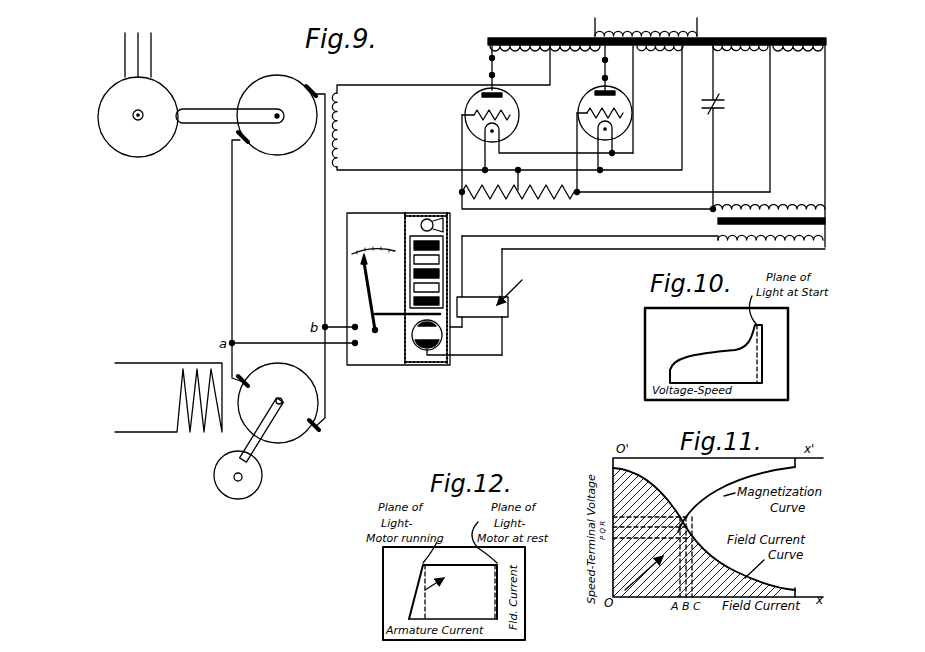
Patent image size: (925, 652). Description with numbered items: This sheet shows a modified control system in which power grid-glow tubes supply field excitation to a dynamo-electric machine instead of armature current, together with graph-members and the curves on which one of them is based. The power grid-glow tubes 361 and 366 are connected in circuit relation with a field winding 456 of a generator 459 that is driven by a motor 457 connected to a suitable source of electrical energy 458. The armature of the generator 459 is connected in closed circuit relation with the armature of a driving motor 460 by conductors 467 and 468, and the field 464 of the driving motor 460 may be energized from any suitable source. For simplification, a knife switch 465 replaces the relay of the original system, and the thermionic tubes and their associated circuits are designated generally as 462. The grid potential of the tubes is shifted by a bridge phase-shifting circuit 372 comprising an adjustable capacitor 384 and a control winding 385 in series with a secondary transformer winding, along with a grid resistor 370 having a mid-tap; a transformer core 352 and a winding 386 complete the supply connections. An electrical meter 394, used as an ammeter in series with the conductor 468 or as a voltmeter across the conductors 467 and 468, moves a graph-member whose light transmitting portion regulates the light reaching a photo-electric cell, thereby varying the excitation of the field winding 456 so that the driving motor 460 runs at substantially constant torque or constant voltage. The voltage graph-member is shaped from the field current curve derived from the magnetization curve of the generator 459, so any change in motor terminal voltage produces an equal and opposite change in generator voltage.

The transformer core and primary winding 352 is at (556, 36).
The power grid-glow tube 361 is at (547, 130).
The power grid-glow tube 366 is at (586, 87).
The grid resistor 370 is at (522, 189).
The bridge phase-shifting circuit 372 is at (814, 111).
The adjustable capacitor 384 is at (726, 127).
The control winding 385 is at (776, 204).
The coil winding 386 is at (825, 240).
The electrical meter 394 is at (410, 202).
The field winding 456 is at (343, 130).
The motor 457 is at (150, 174).
The source of electrical energy 458 is at (154, 55).
The generator 459 is at (289, 174).
The driving motor 460 is at (309, 426).
The thermionic tubes and associated circuits 462 is at (508, 306).
The field 464 is at (178, 398).
The knife switch 465 is at (490, 71).
The conductor 467 is at (232, 272).
The conductor 468 is at (325, 236).